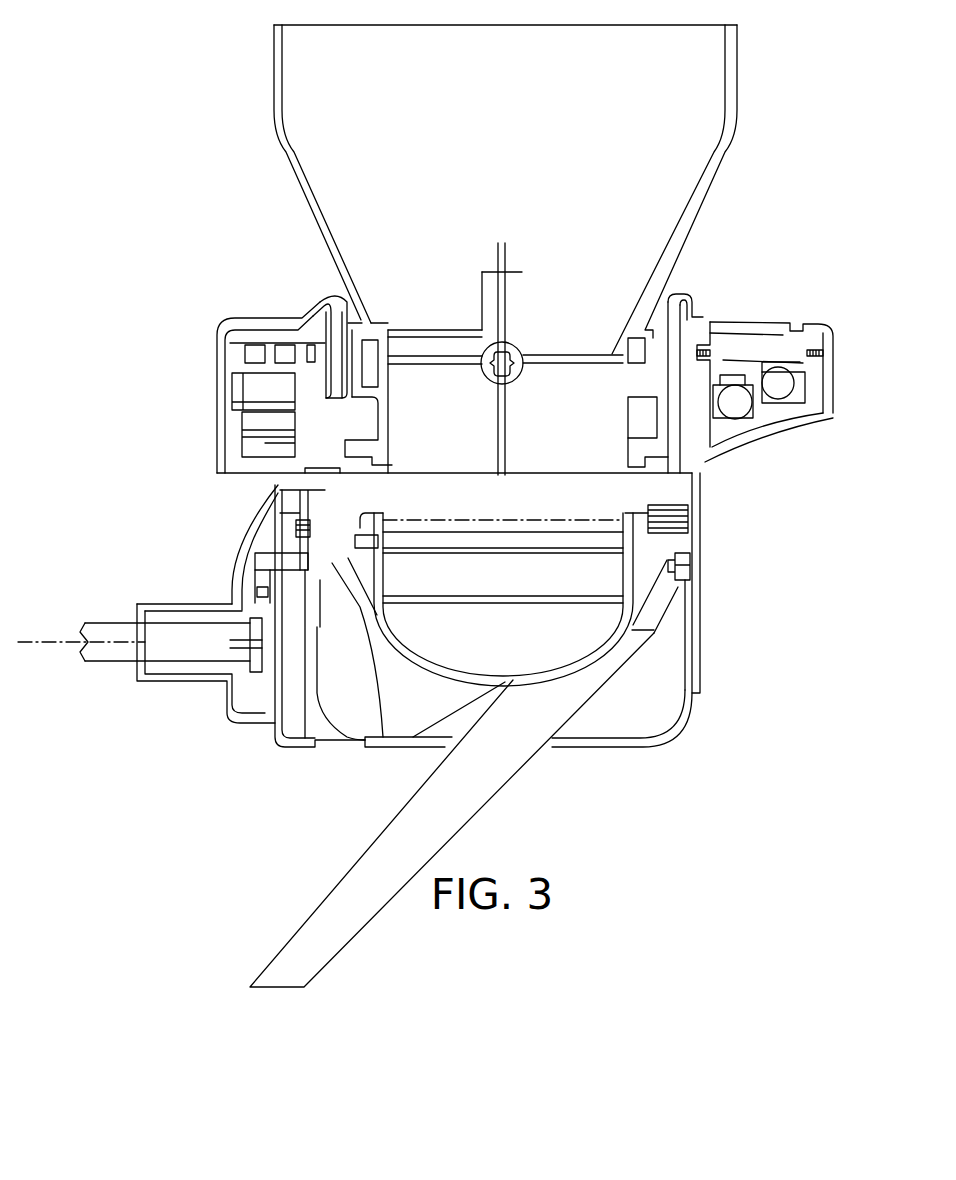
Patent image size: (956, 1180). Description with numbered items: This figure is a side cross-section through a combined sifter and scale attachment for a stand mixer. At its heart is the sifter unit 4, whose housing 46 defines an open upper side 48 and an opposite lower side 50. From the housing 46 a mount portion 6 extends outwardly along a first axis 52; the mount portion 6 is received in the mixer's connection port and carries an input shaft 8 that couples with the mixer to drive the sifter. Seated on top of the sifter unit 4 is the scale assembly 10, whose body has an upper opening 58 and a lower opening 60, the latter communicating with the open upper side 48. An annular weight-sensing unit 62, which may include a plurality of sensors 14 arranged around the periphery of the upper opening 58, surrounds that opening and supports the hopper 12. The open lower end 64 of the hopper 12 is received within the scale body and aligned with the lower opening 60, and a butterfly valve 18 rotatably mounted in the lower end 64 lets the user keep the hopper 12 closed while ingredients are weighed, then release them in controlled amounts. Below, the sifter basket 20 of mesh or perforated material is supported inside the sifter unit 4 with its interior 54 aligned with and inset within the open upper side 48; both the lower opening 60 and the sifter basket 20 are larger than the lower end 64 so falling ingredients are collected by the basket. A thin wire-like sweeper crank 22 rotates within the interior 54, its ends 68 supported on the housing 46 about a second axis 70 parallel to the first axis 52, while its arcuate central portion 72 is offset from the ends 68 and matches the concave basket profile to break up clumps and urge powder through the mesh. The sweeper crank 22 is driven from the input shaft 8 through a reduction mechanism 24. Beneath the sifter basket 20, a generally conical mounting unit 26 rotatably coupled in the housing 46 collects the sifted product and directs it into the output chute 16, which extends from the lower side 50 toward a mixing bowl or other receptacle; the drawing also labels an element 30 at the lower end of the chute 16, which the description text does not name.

The sifter unit 4 is at (725, 722).
The mount portion 6 is at (163, 681).
The input shaft 8 is at (85, 640).
The scale assembly 10 is at (782, 445).
The hopper 12 is at (760, 91).
The sensors 14 is at (247, 402).
The output chute 16 is at (517, 744).
The butterfly valve 18 is at (550, 284).
The sifter basket 20 is at (372, 643).
The sweeper crank 22 is at (383, 546).
The reduction mechanism 24 is at (243, 584).
The mounting unit 26 is at (675, 612).
The discharge chute 30 is at (277, 990).
The housing 46 is at (700, 548).
The open upper side 48 is at (609, 466).
The lower side 50 is at (383, 760).
The first axis 52 is at (48, 646).
The interior 54 is at (548, 578).
The upper opening 58 is at (323, 300).
The lower opening 60 is at (540, 477).
The weight-sensing unit 62 is at (268, 398).
The lower end 64 is at (558, 364).
The ends 68 is at (305, 527).
The second axis 70 is at (418, 520).
The central portion 72 is at (583, 653).